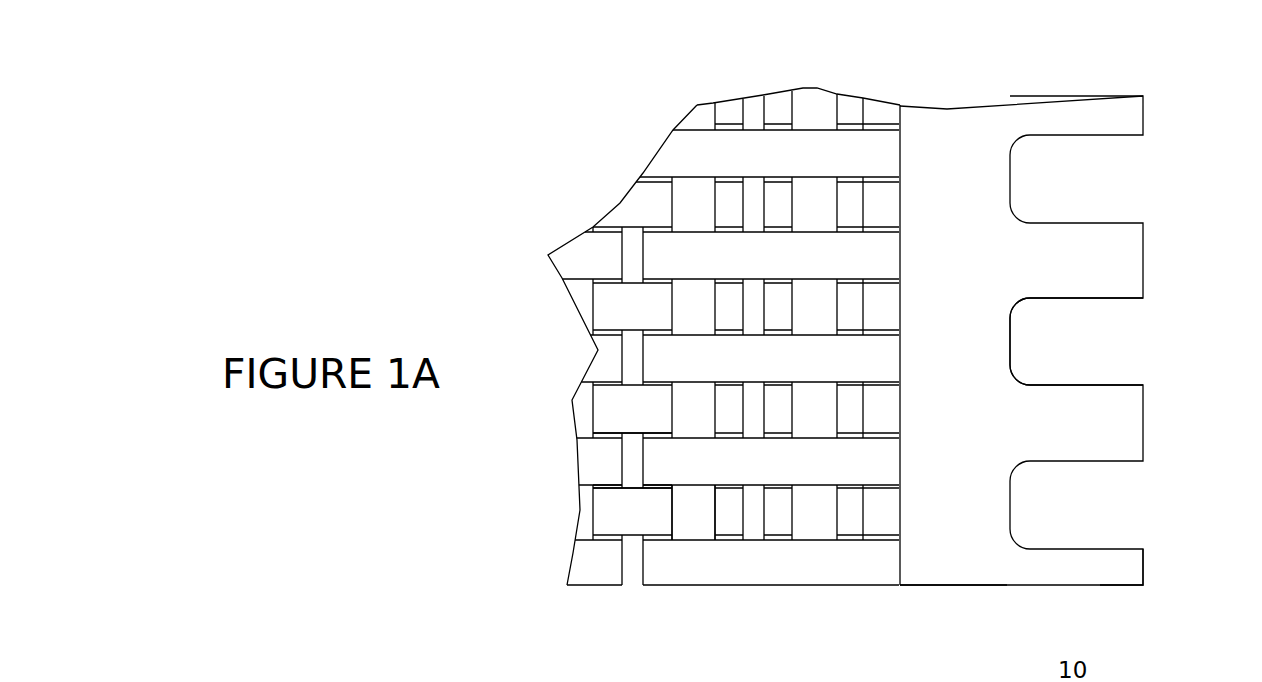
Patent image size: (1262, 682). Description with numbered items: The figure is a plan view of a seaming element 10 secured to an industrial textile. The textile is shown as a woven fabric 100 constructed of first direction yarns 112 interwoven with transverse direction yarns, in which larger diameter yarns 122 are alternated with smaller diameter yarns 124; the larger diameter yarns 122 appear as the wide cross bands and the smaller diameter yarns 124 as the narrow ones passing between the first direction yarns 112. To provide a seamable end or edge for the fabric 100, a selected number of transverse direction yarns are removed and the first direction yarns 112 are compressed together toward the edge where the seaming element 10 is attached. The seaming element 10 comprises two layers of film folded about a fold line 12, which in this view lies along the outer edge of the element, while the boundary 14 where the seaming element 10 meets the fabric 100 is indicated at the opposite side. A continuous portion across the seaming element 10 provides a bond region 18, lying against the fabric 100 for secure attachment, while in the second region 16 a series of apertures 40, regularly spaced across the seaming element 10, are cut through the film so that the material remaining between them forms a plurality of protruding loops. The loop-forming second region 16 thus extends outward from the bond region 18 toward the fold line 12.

The woven fabric 100 is at (553, 156).
The seaming element 10 is at (951, 98).
The fold line 12 is at (1149, 598).
The side surface / interface 14 is at (897, 152).
The second region 16 is at (1143, 82).
The bond region 18 is at (1007, 587).
The apertures 40 is at (1100, 343).
The first direction yarns 112 is at (597, 461).
The larger diameter yarns 122 is at (691, 513).
The smaller diameter yarns 124 is at (633, 560).